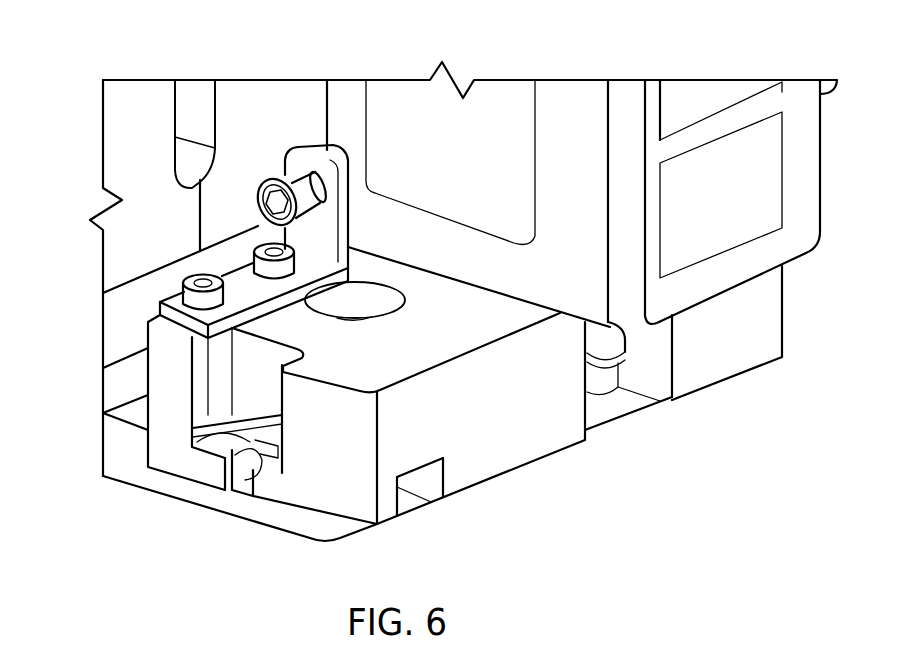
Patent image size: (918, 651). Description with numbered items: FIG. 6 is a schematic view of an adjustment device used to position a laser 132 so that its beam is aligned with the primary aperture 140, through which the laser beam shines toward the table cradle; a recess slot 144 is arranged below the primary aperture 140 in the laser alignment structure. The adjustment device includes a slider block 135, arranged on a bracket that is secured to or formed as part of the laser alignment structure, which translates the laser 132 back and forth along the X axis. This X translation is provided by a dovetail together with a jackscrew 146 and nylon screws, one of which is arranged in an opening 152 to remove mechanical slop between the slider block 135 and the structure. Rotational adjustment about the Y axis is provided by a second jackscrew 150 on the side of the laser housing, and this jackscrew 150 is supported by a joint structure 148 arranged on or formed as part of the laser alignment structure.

The laser 132 is at (566, 100).
The primary aperture 140 is at (193, 97).
The recess slot 144 is at (198, 207).
The joint structure 148 is at (293, 155).
The jackscrew 150 is at (271, 182).
The slider block 135 is at (167, 370).
The jackscrew 146 is at (245, 480).
The opening 152 is at (400, 310).